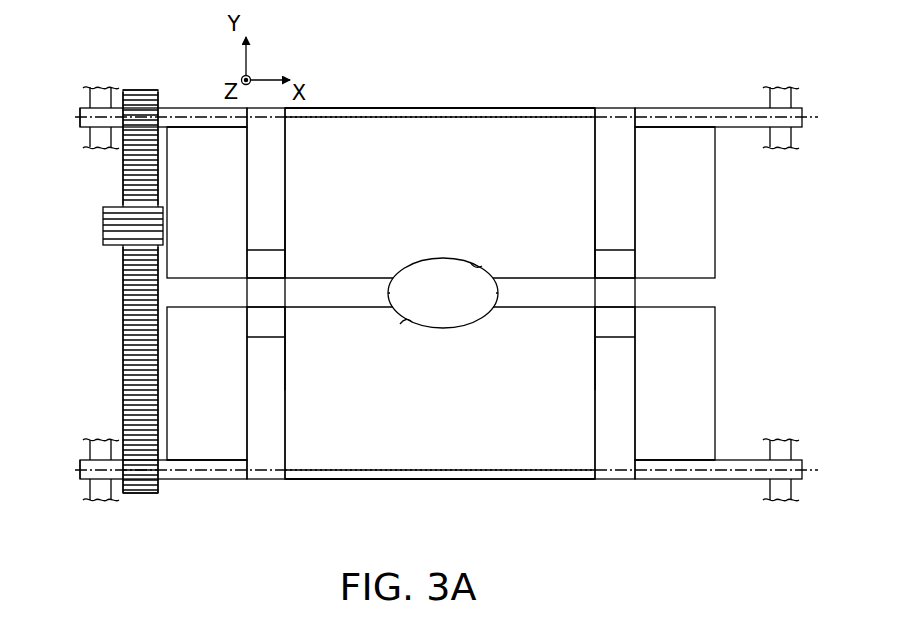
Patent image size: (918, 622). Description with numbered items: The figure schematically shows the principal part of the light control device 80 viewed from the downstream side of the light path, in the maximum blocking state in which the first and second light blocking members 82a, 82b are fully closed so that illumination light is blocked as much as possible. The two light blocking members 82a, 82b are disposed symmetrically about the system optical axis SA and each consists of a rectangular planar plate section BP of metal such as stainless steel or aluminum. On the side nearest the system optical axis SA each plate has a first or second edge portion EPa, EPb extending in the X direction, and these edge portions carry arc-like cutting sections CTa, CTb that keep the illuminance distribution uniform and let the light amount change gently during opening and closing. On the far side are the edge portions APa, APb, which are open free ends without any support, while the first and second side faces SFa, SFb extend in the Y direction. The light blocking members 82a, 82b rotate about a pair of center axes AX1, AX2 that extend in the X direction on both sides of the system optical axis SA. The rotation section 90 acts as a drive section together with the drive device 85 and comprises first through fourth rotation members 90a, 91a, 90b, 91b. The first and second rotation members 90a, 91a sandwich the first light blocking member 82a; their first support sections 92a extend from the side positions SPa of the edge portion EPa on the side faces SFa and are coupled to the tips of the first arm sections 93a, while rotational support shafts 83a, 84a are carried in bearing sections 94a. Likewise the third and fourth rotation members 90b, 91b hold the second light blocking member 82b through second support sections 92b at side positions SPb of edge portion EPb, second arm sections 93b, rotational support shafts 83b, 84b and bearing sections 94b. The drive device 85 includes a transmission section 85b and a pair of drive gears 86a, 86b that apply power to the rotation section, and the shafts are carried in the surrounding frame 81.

The light control device 80 is at (697, 78).
The frame 81 is at (108, 148).
The first light blocking member 82a is at (370, 136).
The second light blocking member 82b is at (369, 455).
The rotational support shaft 83a is at (120, 100).
The rotational support shaft 83b is at (118, 480).
The rotational support shaft 84a is at (732, 115).
The rotational support shaft 84b is at (734, 476).
The drive device 85 is at (146, 498).
The transmission section 85b is at (113, 238).
The drive gear 86a is at (128, 193).
The drive gear 86b is at (121, 350).
The rotation section 90 is at (105, 57).
The first rotation member 90a is at (156, 57).
The third rotation member 90b is at (217, 498).
The second rotation member 91a is at (660, 72).
The fourth rotation member 91b is at (697, 498).
The first support section 92a is at (259, 280).
The second support section 92b is at (259, 340).
The first arm section 93a is at (183, 178).
The second arm section 93b is at (183, 408).
The bearing section 94a is at (90, 113).
The bearing section 94b is at (90, 468).
The center axis AX1 is at (553, 105).
The center axis AX2 is at (551, 483).
The edge portion APa is at (490, 106).
The edge portion APb is at (493, 484).
The plate section BP is at (343, 137).
The system optical axis SA is at (440, 296).
The cutting section CTa is at (478, 268).
The cutting section CTb is at (404, 322).
The first edge portion EPa is at (406, 299).
The second edge portion EPb is at (475, 292).
The first side face SFa is at (283, 205).
The second side face SFb is at (272, 330).
The side position SPa is at (283, 258).
The side position SPb is at (280, 328).